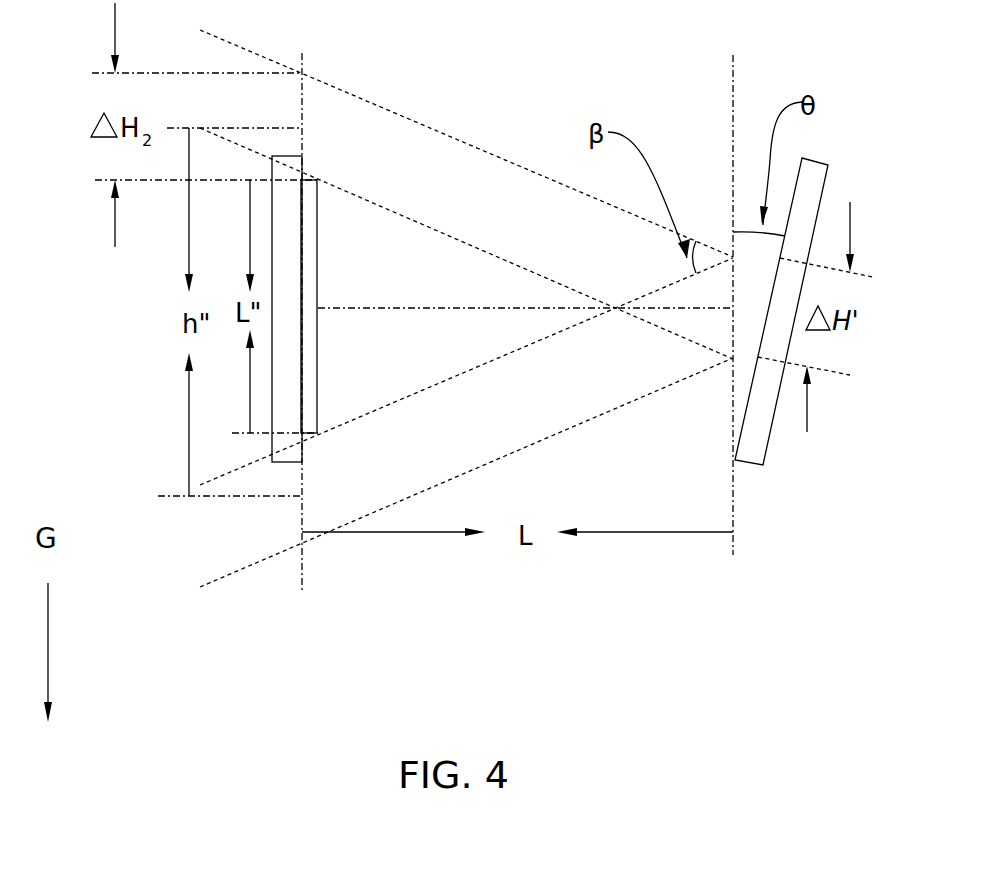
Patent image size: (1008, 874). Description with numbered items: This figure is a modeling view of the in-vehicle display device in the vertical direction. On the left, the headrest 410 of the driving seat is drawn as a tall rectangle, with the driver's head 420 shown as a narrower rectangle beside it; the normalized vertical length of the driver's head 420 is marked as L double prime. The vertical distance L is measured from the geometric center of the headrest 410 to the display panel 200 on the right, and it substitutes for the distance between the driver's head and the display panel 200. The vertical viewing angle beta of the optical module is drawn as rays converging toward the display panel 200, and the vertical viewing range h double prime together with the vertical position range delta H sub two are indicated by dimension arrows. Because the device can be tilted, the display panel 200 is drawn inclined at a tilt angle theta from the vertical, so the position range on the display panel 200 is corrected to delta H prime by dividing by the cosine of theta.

The headrest 410 is at (288, 155).
The driver's head 420 is at (305, 180).
The display panel 200 is at (768, 447).